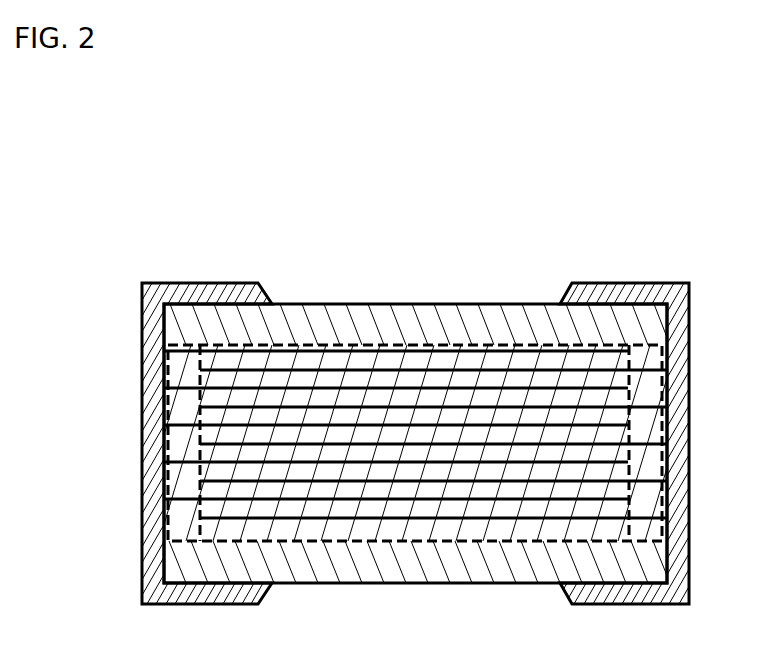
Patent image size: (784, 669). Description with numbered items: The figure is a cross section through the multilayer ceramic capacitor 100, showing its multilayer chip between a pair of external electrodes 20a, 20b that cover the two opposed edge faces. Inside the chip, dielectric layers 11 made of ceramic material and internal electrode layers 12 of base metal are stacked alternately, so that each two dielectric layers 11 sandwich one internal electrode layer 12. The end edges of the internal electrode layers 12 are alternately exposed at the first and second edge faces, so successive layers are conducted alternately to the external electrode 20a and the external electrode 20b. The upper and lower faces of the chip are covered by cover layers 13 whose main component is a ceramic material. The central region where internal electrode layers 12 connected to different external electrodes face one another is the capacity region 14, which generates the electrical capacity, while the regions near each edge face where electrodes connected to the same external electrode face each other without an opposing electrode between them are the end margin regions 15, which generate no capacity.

The multilayer ceramic capacitor 100 is at (392, 399).
The external electrode 20a is at (163, 283).
The external electrode 20b is at (657, 283).
The cover layer 13 is at (327, 317).
The capacity region 14 is at (435, 345).
The end margin region 15 is at (185, 343).
The internal electrode layer 12 is at (408, 481).
The dielectric layer 11 is at (517, 505).